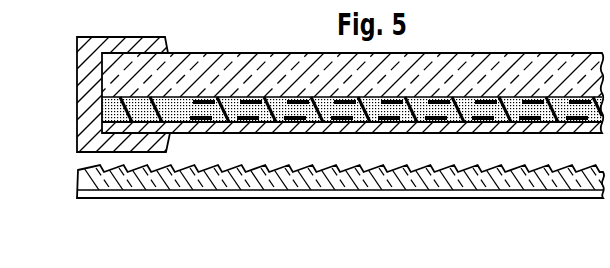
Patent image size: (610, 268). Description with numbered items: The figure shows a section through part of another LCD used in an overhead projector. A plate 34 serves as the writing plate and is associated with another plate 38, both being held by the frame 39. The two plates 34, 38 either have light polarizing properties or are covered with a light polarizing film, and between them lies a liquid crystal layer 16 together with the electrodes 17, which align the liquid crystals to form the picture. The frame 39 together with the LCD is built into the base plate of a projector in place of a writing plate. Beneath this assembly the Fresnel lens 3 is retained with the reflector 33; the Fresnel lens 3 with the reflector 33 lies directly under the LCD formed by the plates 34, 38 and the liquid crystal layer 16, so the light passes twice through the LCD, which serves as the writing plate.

The Fresnel lens 3 is at (300, 183).
The liquid crystal layer 16 is at (235, 102).
The electrodes 17 is at (502, 112).
The reflector 33 is at (222, 193).
The plate 34 is at (196, 70).
The plate 38 is at (283, 128).
The frame 39 is at (92, 140).